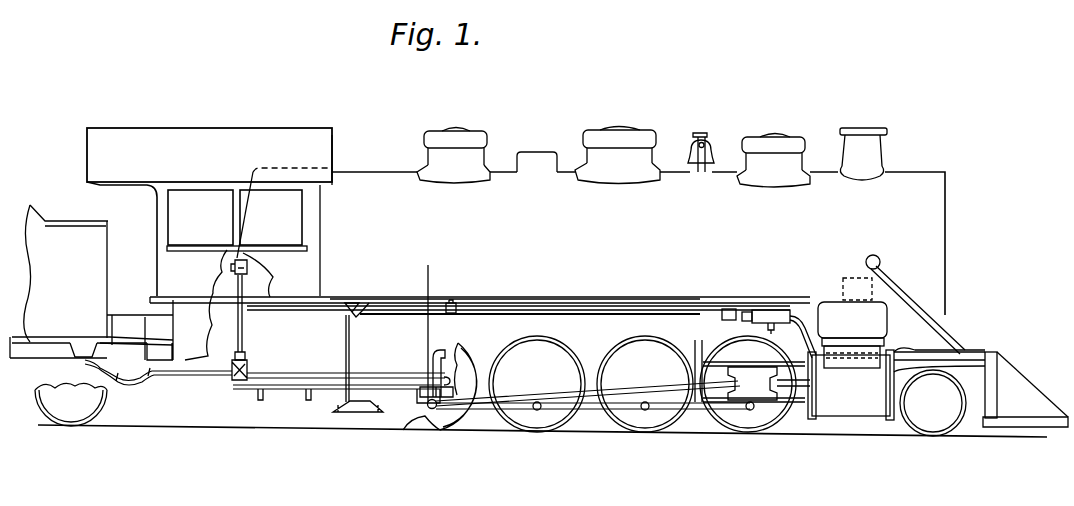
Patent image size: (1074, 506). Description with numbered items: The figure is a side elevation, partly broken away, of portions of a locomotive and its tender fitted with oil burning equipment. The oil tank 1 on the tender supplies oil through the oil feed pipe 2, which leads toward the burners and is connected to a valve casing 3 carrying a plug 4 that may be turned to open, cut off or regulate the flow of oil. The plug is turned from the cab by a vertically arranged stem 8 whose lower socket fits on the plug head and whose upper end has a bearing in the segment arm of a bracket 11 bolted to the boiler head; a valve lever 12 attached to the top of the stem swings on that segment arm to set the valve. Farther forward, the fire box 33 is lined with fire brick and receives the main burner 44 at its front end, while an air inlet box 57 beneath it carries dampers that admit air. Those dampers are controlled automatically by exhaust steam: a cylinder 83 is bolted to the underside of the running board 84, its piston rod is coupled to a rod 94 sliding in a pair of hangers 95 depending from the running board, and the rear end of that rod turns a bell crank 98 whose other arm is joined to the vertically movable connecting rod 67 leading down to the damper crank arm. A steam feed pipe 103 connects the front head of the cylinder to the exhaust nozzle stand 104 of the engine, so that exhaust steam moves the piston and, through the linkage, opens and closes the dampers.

The oil tank 1 is at (100, 262).
The oil feed pipe 2 is at (107, 378).
The valve casing 3 is at (247, 366).
The plug 4 is at (232, 381).
The stem 8 is at (244, 322).
The bracket 11 is at (248, 272).
The valve lever 12 is at (243, 252).
The fire box 33 is at (418, 327).
The main burner 44 is at (421, 410).
The air inlet box 57 is at (344, 414).
The connecting rod 67 is at (355, 337).
The cylinder 83 is at (770, 306).
The running board 84 is at (637, 302).
The rod 94 is at (558, 302).
The hangers 95 is at (706, 305).
The bell crank 98 is at (377, 302).
The steam feed pipe 103 is at (851, 385).
The exhaust nozzle stand 104 is at (843, 285).